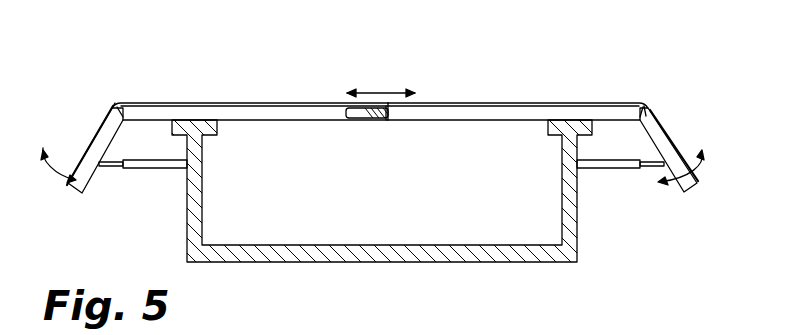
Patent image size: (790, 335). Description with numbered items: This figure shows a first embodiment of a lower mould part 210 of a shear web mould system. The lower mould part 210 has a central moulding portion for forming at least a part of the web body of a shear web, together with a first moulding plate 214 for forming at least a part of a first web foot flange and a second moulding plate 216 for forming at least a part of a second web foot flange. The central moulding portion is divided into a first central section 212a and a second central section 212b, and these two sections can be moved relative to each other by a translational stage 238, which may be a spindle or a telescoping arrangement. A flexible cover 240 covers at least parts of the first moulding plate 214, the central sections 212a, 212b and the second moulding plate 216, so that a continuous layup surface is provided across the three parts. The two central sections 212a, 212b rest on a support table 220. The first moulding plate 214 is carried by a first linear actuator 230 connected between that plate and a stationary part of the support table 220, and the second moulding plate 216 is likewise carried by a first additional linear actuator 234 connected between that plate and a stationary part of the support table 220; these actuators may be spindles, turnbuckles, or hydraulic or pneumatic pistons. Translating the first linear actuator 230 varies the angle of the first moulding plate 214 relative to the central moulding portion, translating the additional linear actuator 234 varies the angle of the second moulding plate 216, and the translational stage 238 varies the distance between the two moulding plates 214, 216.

The lower mould part 210 is at (398, 44).
The first central section 212a is at (250, 102).
The second central section 212b is at (468, 113).
The first moulding plate 214 is at (100, 138).
The second moulding plate 216 is at (663, 138).
The support table 220 is at (575, 223).
The first linear actuator 230 is at (132, 168).
The first additional linear actuator 234 is at (627, 168).
The translational stage 238 is at (378, 120).
The flexible cover 240 is at (653, 105).